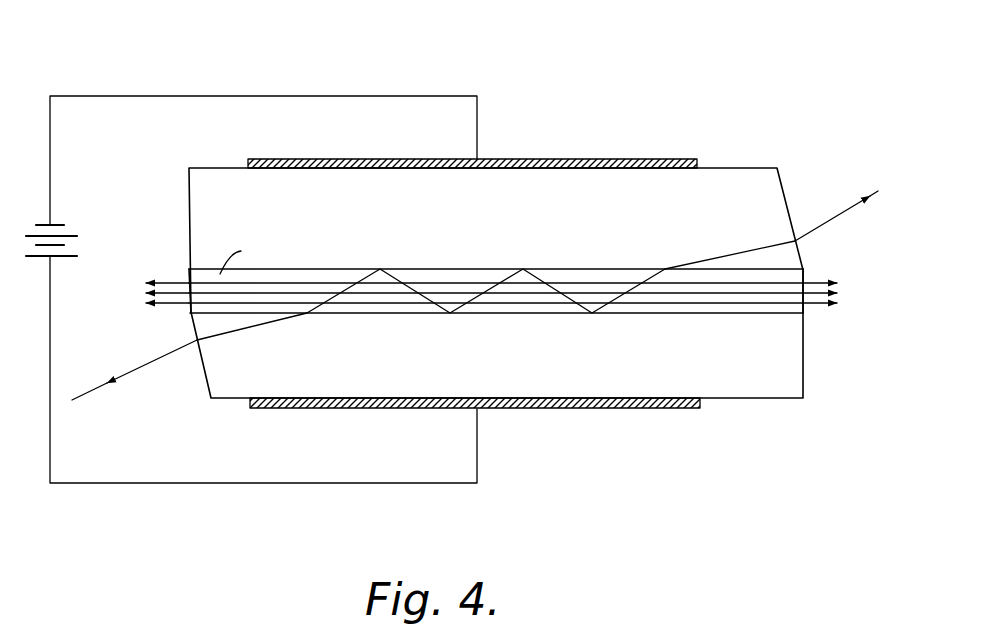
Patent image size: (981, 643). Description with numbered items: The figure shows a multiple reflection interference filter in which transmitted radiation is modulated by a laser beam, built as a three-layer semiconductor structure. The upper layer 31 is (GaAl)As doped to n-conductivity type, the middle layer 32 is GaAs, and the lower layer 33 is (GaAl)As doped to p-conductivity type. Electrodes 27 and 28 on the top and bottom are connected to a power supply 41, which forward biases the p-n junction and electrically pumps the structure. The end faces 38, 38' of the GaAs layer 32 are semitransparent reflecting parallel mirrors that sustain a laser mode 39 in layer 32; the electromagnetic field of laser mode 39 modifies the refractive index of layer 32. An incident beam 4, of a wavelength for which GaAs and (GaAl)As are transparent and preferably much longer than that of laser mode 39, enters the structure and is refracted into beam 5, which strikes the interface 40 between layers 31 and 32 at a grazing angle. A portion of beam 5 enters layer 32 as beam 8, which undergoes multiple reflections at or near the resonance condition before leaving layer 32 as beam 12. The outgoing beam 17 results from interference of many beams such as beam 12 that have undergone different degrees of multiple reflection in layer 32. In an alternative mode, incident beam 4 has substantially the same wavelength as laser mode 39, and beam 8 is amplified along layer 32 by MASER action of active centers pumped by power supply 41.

The incident beam 4 is at (832, 217).
The refracted beam 5 is at (734, 249).
The beam in cavity layer 8 is at (542, 268).
The outgoing multiply reflected beam 12 is at (232, 326).
The outgoing beam 17 is at (134, 372).
The electrode 27 is at (586, 158).
The electrode 28 is at (532, 410).
The n-type (GaAl)As layer 31 is at (300, 219).
The GaAs layer 32 is at (410, 309).
The p-type (GaAl)As layer 33 is at (374, 361).
The end face 38 is at (166, 302).
The end face 38' is at (831, 304).
The laser mode 39 is at (484, 293).
The interface 40 is at (415, 269).
The power supply 41 is at (56, 228).